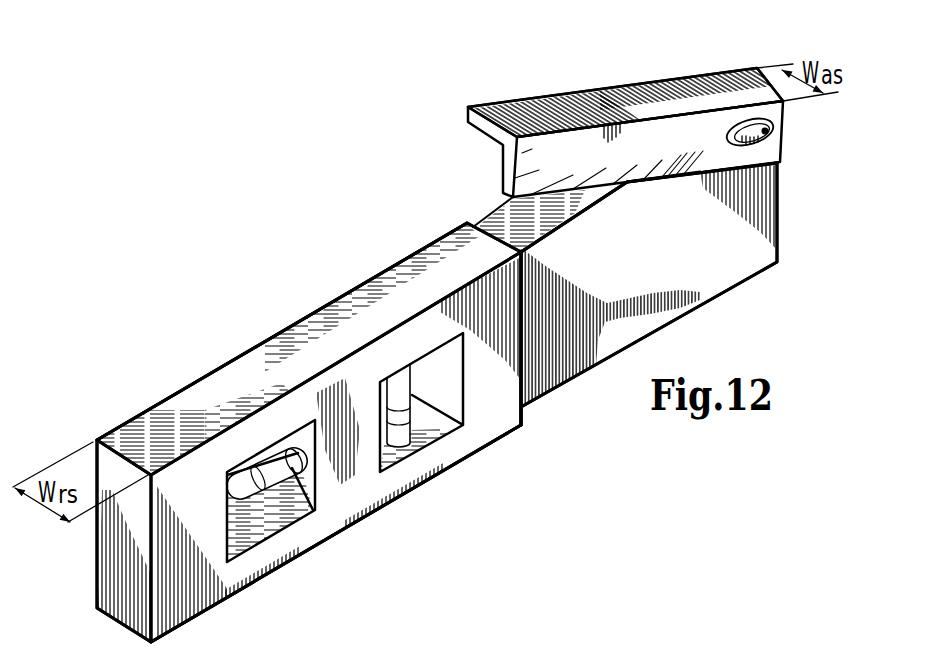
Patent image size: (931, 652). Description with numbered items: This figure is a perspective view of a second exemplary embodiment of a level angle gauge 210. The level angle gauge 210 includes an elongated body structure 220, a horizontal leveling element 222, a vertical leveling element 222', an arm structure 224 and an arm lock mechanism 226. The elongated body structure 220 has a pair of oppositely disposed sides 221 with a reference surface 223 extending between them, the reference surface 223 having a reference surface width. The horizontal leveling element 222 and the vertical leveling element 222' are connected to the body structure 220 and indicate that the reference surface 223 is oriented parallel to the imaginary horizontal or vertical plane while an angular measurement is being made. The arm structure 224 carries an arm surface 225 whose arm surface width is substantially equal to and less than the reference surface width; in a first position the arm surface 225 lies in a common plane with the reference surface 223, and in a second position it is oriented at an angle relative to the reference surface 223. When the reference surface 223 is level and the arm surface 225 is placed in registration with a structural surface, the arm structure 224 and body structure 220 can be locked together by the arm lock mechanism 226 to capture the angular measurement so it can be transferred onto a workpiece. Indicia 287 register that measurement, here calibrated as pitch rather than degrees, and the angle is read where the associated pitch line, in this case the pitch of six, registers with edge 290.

The level angle gauge 210 is at (220, 289).
The elongated body structure 220 is at (455, 445).
The sides 221 is at (187, 387).
The horizontal leveling element 222 is at (315, 507).
The vertical leveling element 222' is at (489, 402).
The reference surface 223 is at (387, 285).
The arm structure 224 is at (540, 107).
The arm surface 225 is at (613, 98).
The arm lock mechanism 226 is at (764, 141).
The indicia 287 is at (672, 192).
The edge 290 is at (585, 210).